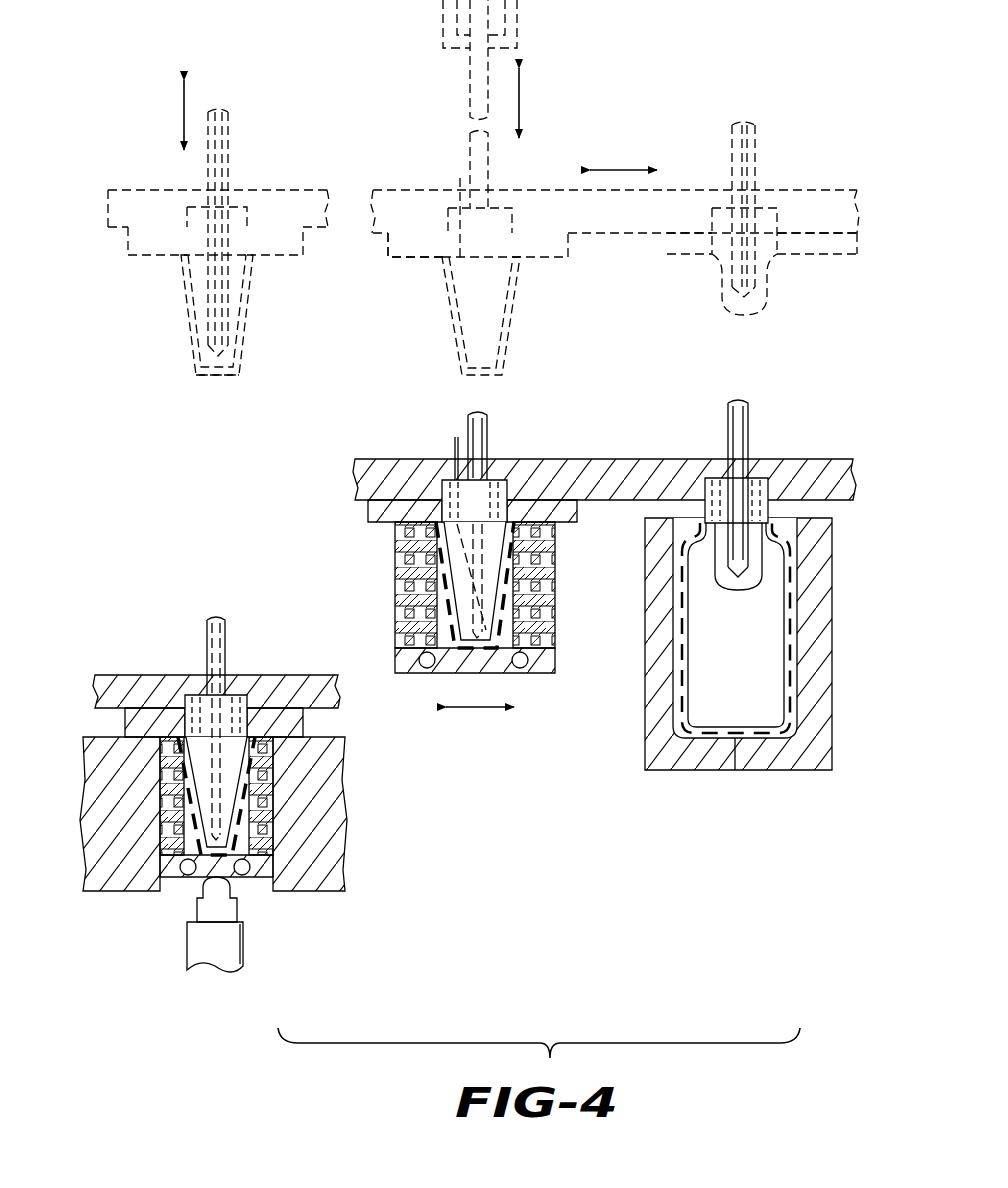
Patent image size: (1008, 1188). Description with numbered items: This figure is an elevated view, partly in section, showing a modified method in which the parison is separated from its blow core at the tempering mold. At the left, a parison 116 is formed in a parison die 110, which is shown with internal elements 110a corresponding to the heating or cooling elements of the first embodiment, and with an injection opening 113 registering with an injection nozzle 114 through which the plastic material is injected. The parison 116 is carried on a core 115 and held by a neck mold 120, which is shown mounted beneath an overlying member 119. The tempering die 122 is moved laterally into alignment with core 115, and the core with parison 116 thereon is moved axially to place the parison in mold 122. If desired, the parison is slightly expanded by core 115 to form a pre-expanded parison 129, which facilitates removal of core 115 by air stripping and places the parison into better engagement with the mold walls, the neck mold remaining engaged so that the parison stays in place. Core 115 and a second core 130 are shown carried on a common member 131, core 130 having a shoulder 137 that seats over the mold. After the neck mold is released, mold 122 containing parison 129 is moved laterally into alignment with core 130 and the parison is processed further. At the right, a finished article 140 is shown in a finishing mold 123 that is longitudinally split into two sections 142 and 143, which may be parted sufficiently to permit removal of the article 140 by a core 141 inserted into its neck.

The parison die 110 is at (332, 840).
The spring stack / resilient members 110a is at (160, 813).
The pin 113 is at (203, 879).
The plunger 114 is at (232, 956).
The core 115 is at (196, 318).
The parison 116 is at (200, 367).
The upper plate 119 is at (130, 684).
The neck mold 120 is at (125, 721).
The tempering die 122 is at (395, 555).
The vial holder block 123 is at (820, 731).
The pre-expanded parison 129 is at (506, 346).
The core 130 is at (466, 328).
The carrier plate 131 is at (636, 472).
The flange 137 is at (420, 255).
The vial 140 is at (790, 615).
The dispensing tip 141 is at (770, 288).
The holder block right portion 142 is at (787, 760).
The holder block left portion 143 is at (693, 760).